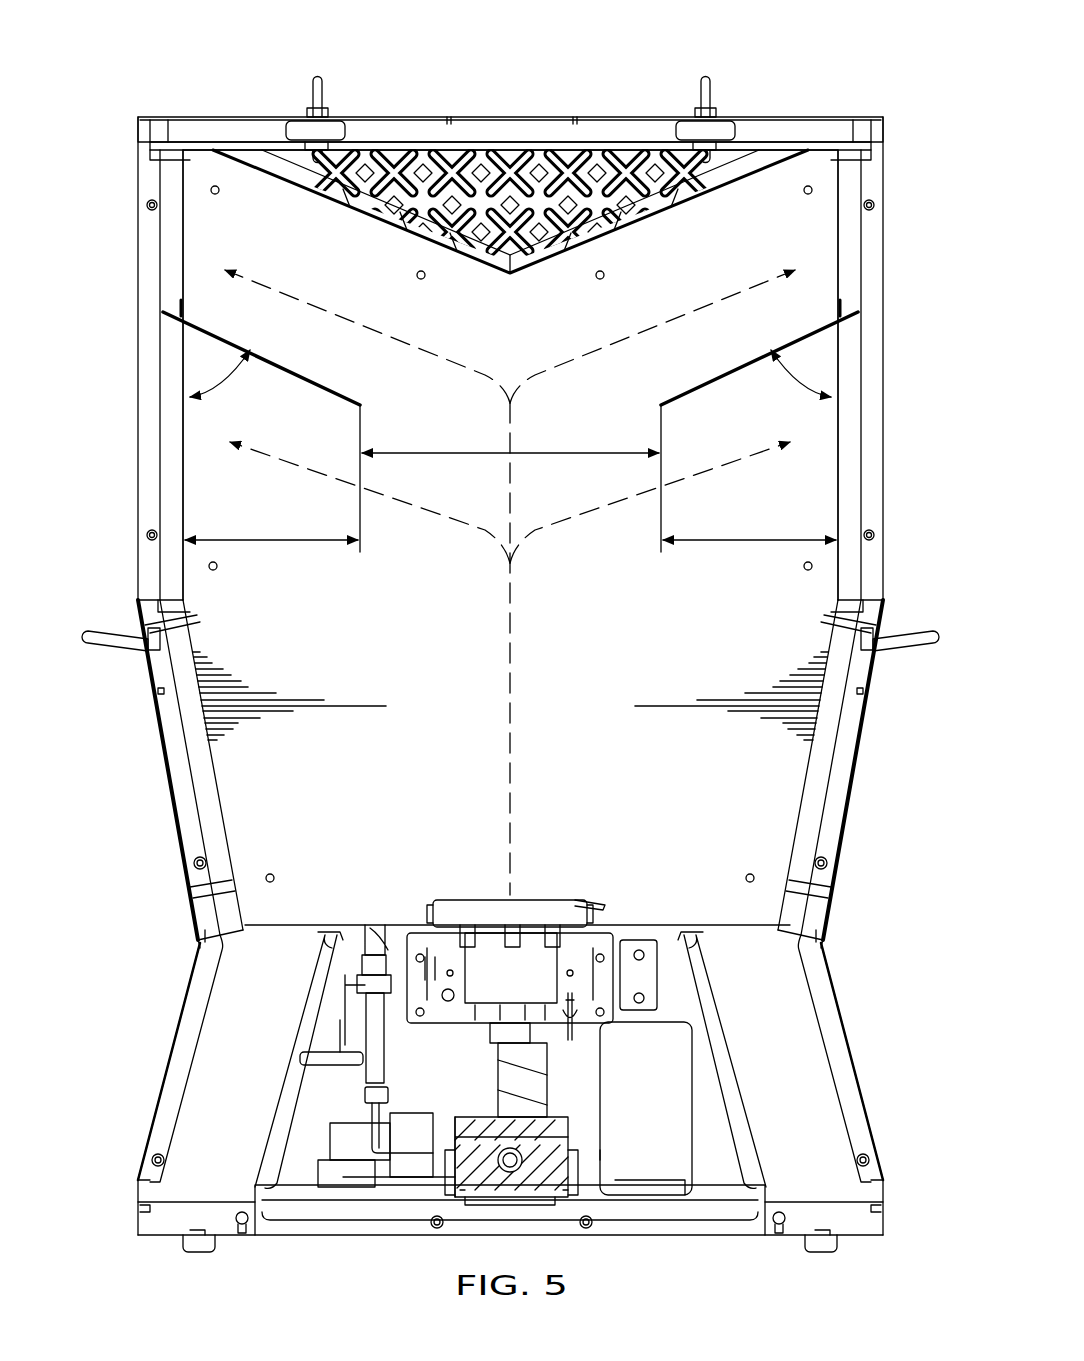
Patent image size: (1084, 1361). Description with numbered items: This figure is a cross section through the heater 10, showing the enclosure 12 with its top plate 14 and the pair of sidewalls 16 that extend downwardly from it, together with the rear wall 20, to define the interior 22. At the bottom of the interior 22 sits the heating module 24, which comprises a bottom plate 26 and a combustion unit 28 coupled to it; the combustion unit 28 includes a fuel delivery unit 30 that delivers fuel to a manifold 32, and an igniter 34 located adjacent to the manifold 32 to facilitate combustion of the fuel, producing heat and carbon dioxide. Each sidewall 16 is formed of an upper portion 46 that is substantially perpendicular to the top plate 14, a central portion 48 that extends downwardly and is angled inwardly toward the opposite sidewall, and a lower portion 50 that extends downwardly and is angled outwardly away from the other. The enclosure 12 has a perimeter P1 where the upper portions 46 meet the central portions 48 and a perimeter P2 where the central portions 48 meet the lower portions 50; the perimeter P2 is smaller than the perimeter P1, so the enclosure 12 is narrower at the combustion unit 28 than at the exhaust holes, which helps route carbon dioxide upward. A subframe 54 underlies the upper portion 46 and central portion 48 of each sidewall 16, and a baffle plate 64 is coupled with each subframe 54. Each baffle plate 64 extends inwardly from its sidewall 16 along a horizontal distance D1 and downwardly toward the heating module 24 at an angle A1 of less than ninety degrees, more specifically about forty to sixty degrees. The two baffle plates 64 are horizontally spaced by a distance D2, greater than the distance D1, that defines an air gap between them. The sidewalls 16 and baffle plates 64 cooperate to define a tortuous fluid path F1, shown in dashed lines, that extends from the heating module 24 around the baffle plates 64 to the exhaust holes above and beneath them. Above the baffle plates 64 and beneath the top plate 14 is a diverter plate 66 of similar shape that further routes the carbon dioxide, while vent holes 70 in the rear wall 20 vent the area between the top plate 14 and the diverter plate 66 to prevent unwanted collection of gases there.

The heater 10 is at (888, 60).
The enclosure 12 is at (110, 265).
The top plate 14 is at (794, 118).
The sidewalls 16 is at (135, 722).
The rear wall 20 is at (385, 152).
The interior 22 is at (820, 478).
The heating module 24 is at (310, 1258).
The bottom plate 26 is at (178, 1205).
The combustion unit 28 is at (715, 1125).
The fuel delivery unit 30 is at (575, 1145).
The manifold 32 is at (545, 898).
The igniter 34 is at (386, 915).
The upper portion 46 is at (138, 358).
The central portion 48 is at (165, 778).
The lower portion 50 is at (160, 1060).
The subframe 54 is at (222, 782).
The baffle plates 64 is at (275, 352).
The diverter plate 66 is at (385, 217).
The vent holes 70 is at (620, 190).
The angle A1 is at (510, 383).
The horizontal distance D1 is at (510, 555).
The distance D2 is at (510, 437).
The tortuous fluid path F1 is at (518, 665).
The perimeter P1 is at (130, 603).
The perimeter P2 is at (193, 942).